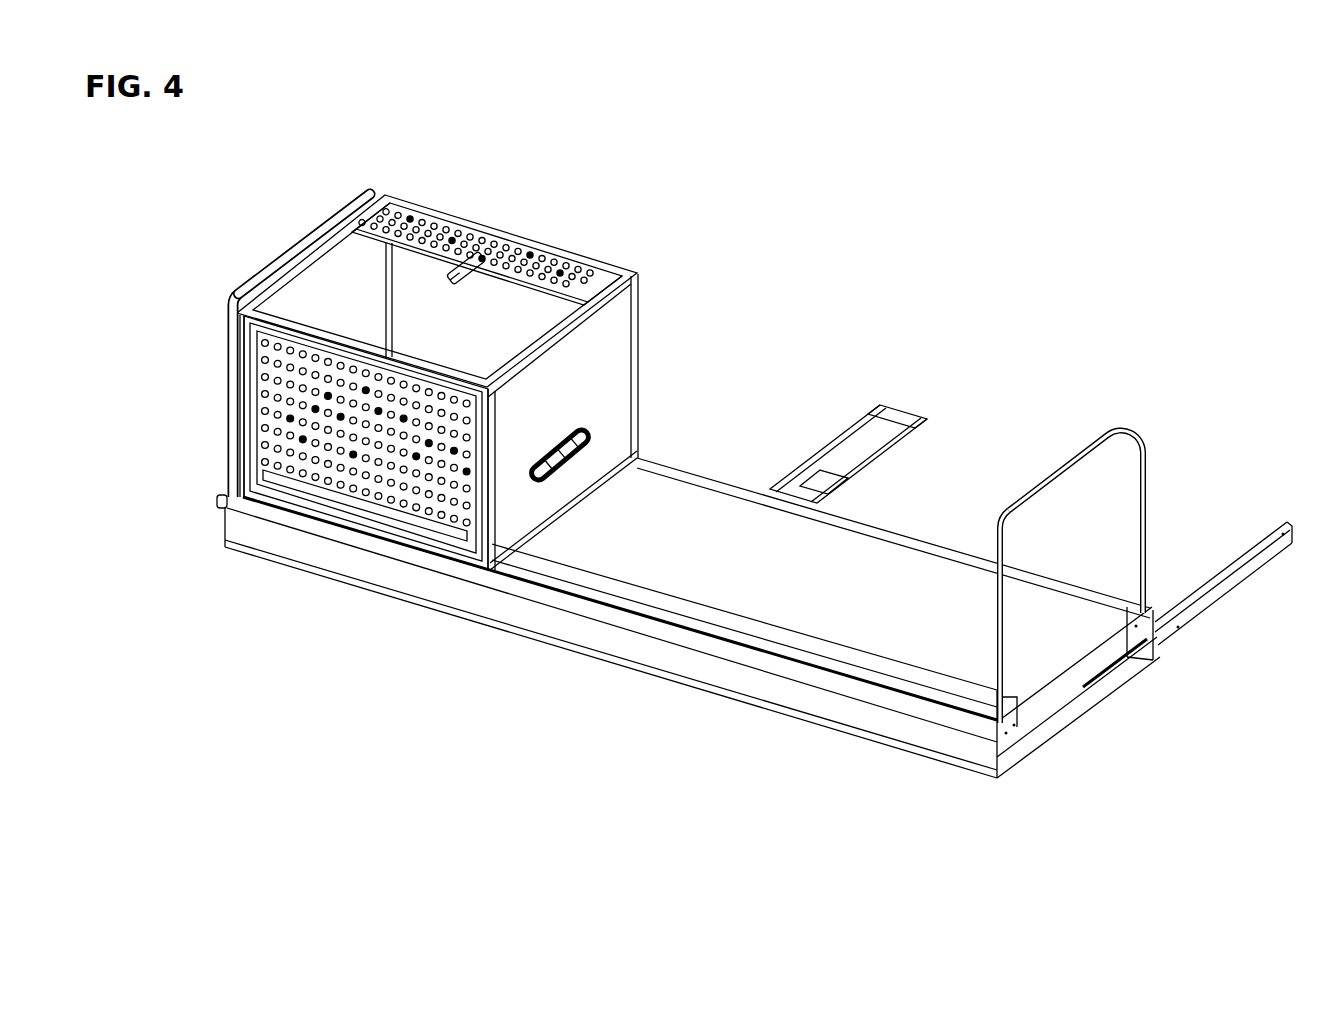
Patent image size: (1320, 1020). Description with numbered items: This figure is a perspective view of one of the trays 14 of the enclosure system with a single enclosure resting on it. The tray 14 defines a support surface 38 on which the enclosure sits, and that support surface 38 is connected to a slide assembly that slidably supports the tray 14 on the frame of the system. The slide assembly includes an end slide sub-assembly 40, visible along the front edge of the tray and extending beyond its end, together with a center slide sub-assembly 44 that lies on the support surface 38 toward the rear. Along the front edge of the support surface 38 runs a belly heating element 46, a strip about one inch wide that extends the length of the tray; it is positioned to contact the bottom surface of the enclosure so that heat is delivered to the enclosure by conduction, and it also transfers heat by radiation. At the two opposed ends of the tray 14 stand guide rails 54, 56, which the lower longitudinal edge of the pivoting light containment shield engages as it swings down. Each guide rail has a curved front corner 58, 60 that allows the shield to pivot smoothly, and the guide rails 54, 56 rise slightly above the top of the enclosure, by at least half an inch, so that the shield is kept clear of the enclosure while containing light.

The tray 14 is at (1095, 718).
The support surface 38 is at (788, 590).
The end slide sub-assembly 40 is at (1033, 740).
The center slide sub-assembly 44 is at (890, 458).
The belly heating element 46 is at (553, 568).
The guide rail 54 is at (374, 186).
The guide rail 56 is at (1146, 443).
The curved front corner 58 is at (232, 292).
The curved front corner 60 is at (1007, 527).